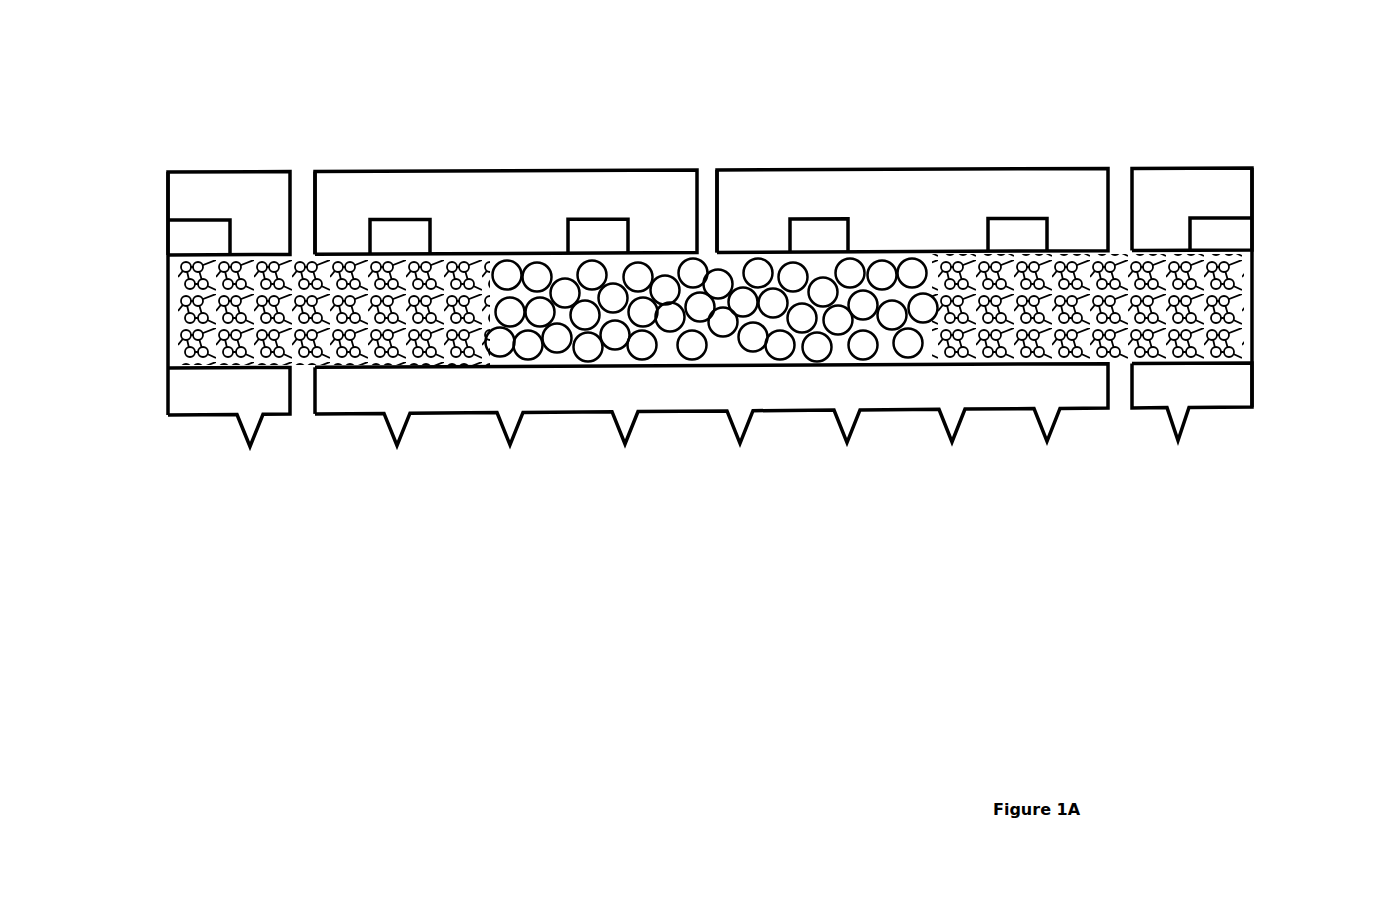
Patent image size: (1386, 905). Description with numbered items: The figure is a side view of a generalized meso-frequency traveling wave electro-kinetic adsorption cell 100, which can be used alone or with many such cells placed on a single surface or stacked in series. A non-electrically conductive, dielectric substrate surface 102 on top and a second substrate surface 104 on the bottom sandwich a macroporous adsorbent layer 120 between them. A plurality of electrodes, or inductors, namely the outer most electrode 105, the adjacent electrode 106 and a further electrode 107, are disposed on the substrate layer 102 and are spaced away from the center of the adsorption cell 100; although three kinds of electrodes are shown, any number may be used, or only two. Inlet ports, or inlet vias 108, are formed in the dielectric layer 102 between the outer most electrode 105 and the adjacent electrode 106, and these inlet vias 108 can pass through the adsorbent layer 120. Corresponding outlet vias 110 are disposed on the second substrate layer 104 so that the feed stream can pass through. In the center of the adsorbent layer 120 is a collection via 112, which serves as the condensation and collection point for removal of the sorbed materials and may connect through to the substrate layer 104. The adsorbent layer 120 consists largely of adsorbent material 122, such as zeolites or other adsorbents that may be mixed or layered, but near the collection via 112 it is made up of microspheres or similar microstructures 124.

The meso-frequency traveling wave electro-kinetic adsorption cell 100 is at (1298, 296).
The dielectric substrate surface 102 is at (260, 165).
The second substrate surface 104 is at (232, 410).
The outer most electrode 105 is at (160, 233).
The electrode 106 is at (407, 233).
The electrode 107 is at (590, 235).
The inlet via 108 is at (303, 175).
The outlet via 110 is at (300, 415).
The collection via 112 is at (707, 165).
The macroporous adsorbent layer 120 is at (165, 313).
The adsorbent material 122 is at (1228, 343).
The microspheres 124 is at (697, 350).